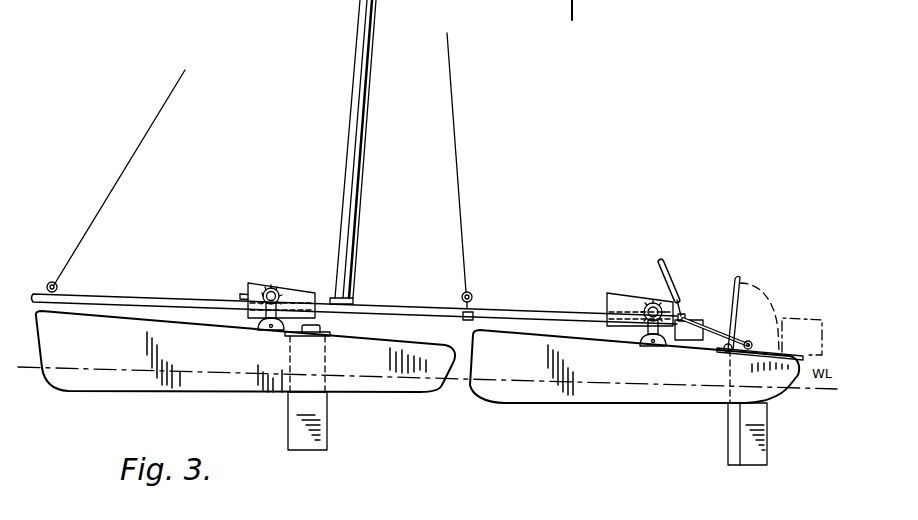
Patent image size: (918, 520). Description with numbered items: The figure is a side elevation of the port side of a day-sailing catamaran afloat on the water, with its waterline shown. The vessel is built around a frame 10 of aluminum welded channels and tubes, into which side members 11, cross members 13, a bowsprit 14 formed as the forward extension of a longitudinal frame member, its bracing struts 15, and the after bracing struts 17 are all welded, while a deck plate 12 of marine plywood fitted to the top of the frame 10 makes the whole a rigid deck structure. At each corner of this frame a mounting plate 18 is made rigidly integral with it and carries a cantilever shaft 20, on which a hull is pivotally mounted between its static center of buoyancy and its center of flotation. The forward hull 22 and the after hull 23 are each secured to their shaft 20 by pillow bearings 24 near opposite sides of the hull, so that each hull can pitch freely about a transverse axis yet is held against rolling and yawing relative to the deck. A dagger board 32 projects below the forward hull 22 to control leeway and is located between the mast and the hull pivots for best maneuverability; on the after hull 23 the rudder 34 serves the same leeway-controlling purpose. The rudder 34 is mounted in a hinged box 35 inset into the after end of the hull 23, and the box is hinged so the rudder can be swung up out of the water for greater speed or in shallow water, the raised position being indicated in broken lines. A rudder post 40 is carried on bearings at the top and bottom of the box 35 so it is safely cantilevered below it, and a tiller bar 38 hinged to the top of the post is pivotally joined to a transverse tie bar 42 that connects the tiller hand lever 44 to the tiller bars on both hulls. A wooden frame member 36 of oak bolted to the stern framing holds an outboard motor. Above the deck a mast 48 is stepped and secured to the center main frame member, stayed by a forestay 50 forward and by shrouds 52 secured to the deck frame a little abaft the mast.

The frame 10 is at (457, 329).
The side members 11 is at (407, 309).
The deck plate 12 is at (522, 306).
The cross members 13 is at (306, 305).
The bowsprit 14 is at (103, 294).
The bracing struts 15 is at (172, 301).
The bracing struts 17 is at (699, 337).
The mounting plates 18 is at (250, 285).
The cantilever shaft 20 is at (275, 298).
The forward hulls 22 is at (101, 388).
The after hulls 23 is at (550, 390).
The pillow bearings 24 is at (262, 325).
The dagger boards 32 is at (324, 405).
The rudders 34 is at (769, 424).
The hinged boxes 35 is at (765, 293).
The wooden frame member 36 is at (700, 320).
The tiller bars 38 is at (738, 344).
The rudder post 40 is at (751, 346).
The transverse tie bar 42 is at (684, 314).
The tiller hand lever 44 is at (662, 263).
The mast 48 is at (353, 126).
The forestay 50 is at (141, 142).
The shrouds 52 is at (455, 139).